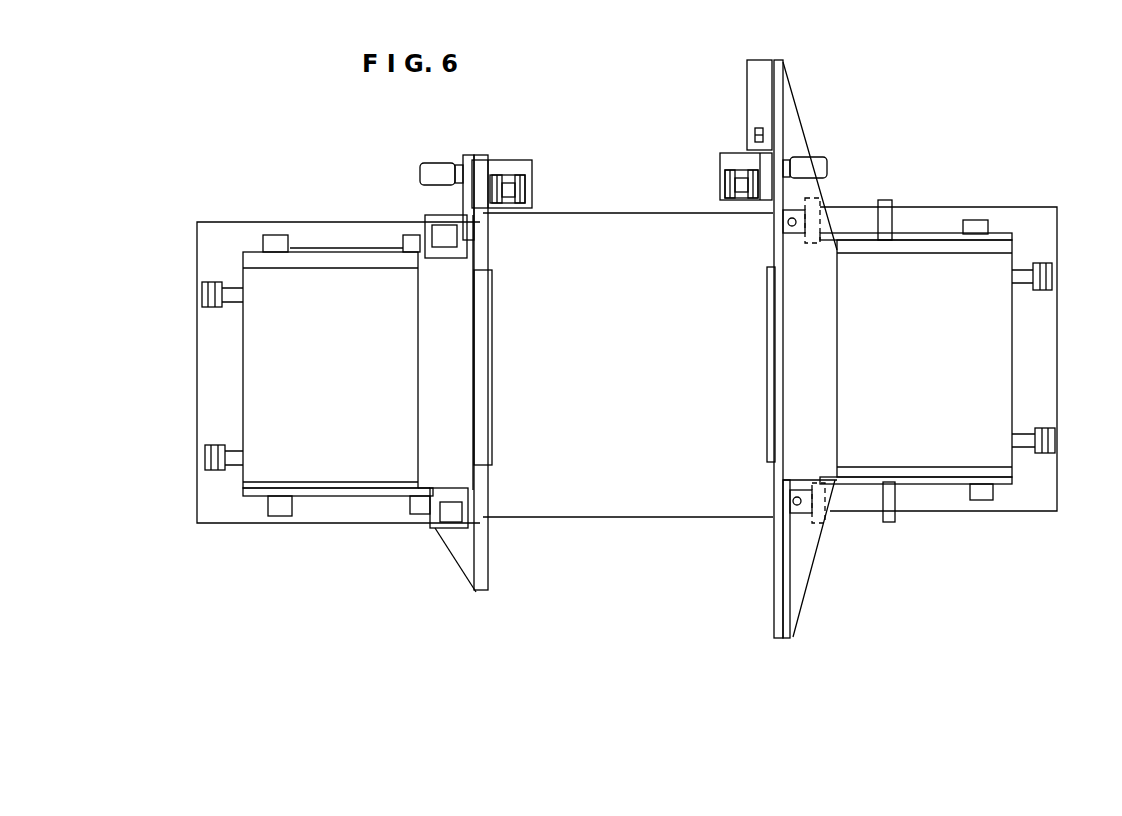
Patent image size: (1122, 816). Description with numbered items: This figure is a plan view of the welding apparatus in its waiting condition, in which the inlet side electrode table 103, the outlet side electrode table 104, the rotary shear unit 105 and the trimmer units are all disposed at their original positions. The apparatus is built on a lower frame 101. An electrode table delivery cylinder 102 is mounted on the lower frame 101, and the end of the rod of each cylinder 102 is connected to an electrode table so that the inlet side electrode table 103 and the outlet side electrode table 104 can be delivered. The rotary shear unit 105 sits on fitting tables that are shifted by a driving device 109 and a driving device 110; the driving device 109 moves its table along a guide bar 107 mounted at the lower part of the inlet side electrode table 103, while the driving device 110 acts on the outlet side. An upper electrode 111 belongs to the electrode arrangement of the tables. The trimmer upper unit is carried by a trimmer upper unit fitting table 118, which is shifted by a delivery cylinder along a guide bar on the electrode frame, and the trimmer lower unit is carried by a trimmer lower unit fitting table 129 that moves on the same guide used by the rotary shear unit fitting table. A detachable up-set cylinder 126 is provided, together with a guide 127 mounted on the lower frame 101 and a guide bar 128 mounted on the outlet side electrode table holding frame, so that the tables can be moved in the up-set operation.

The lower frame 101 is at (1037, 511).
The electrode table delivery cylinder 102 is at (208, 308).
The inlet side electrode table 103 is at (455, 405).
The outlet side electrode table 104 is at (800, 400).
The rotary shear unit 105 is at (598, 190).
The guide bar 107 is at (490, 585).
The driving device 109 is at (470, 133).
The driving device 110 is at (882, 132).
The upper electrode 111 is at (492, 357).
The trimmer upper unit fitting table 118 is at (747, 80).
The detachable up-set cylinder 126 is at (857, 210).
The guide 127 is at (272, 235).
The guide bar 128 is at (330, 248).
The trimmer lower unit fitting table 129 is at (443, 213).